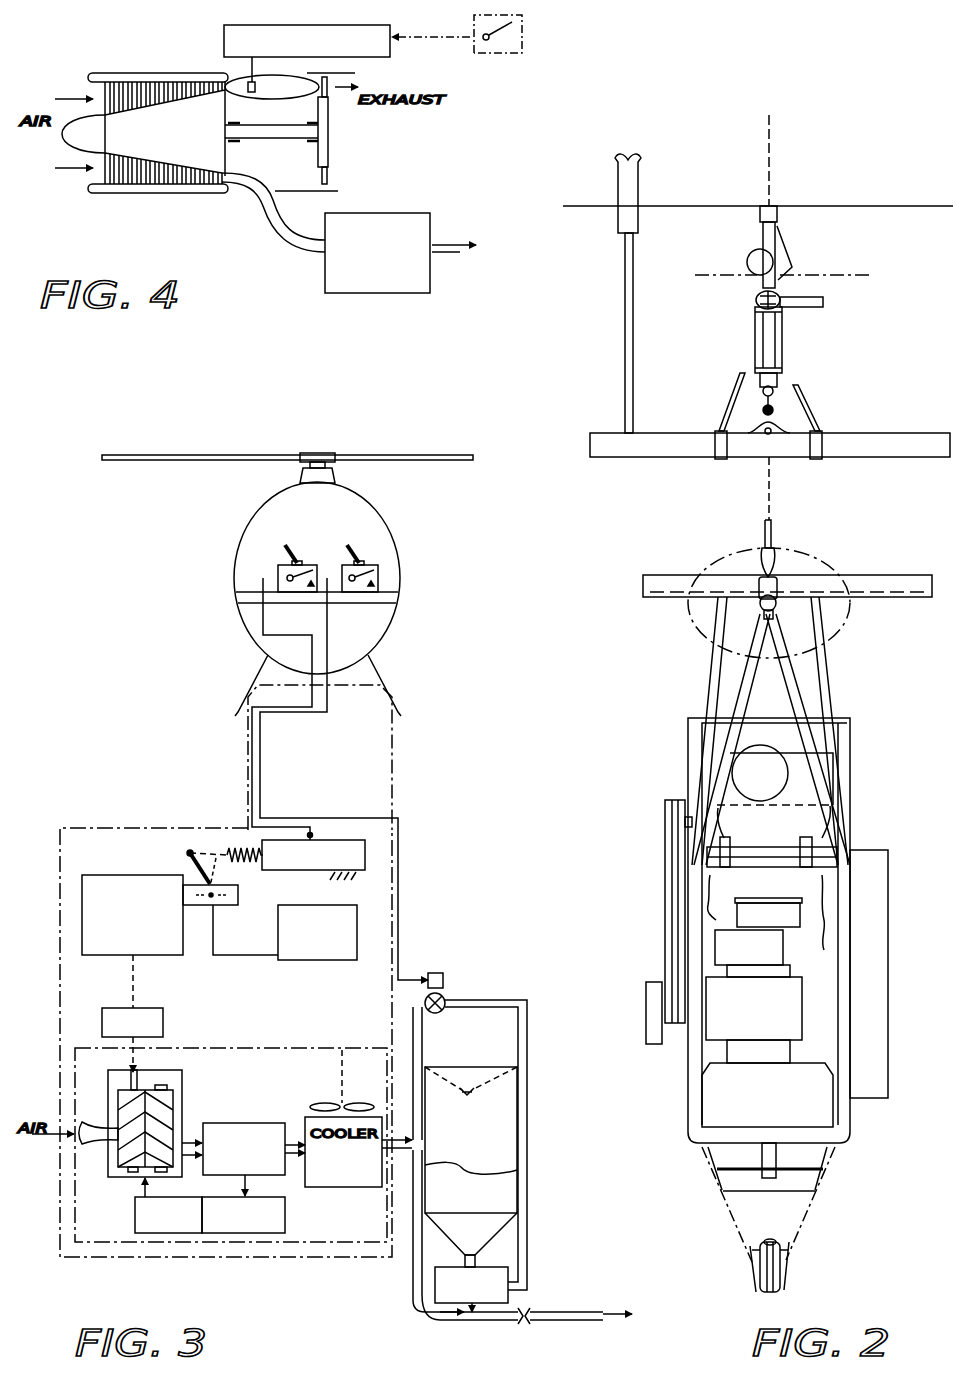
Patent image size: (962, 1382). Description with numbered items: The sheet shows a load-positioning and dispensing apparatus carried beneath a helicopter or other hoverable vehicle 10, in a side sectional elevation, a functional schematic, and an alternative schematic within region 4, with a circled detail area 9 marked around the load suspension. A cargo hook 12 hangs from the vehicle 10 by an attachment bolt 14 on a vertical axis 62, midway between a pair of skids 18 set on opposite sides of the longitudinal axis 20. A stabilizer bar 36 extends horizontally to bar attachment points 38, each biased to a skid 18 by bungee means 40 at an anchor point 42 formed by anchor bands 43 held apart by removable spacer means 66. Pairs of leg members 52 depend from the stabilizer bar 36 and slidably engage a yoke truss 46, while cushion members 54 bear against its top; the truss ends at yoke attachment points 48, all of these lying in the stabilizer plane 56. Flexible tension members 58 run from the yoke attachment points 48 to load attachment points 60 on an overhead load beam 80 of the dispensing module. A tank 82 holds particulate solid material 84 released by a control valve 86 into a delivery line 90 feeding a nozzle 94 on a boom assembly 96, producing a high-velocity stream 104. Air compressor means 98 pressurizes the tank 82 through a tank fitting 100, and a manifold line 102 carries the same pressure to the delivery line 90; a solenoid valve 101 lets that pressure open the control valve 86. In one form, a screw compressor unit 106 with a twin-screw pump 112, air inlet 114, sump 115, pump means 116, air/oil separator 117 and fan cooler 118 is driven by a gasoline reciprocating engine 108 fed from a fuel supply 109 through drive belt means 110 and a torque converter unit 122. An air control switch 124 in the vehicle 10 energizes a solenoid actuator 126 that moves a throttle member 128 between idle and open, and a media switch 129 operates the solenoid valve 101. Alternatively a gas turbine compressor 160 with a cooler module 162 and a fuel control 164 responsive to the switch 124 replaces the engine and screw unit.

In FIG. 3, the region 4 is at (398, 948).
In FIG. 2, the hook assembly detail region 9 is at (690, 622).
In FIG. 2, the hoverable vehicle 10 is at (592, 210).
In FIG. 3, the hoverable vehicle 10 is at (235, 622).
In FIG. 2, the cargo hook 12 is at (779, 246).
In FIG. 2, the attachment bolt 14 is at (760, 228).
In FIG. 2, the skids 18 is at (684, 433).
In FIG. 2, the longitudinal axis 20 is at (852, 275).
In FIG. 2, the stabilizer bar 36 is at (746, 255).
In FIG. 2, the bar attachment points 38 is at (755, 301).
In FIG. 2, the bungee means 40 is at (740, 374).
In FIG. 2, the anchor point 42 is at (730, 406).
In FIG. 2, the anchor band 43 is at (722, 426).
In FIG. 2, the yoke truss 46 is at (783, 352).
In FIG. 2, the yoke attachment points 48 is at (756, 375).
In FIG. 2, the leg members 52 is at (755, 326).
In FIG. 2, the cushion members 54 is at (756, 294).
In FIG. 2, the stabilizer plane 56 is at (771, 156).
In FIG. 2, the flexible tension members 58 is at (773, 531).
In FIG. 2, the load attachment points 60 is at (781, 572).
In FIG. 2, the vertical axis 62 is at (766, 128).
In FIG. 2, the spacer means 66 is at (796, 446).
In FIG. 2, the load beam 80 is at (774, 613).
In FIG. 3, the tank 82 is at (465, 1048).
In FIG. 3, the particulate solid material 84 is at (482, 1210).
In FIG. 3, the control valve 86 is at (527, 1288).
In FIG. 2, the delivery line 90 is at (762, 1158).
In FIG. 3, the delivery line 90 is at (575, 1320).
In FIG. 3, the nozzle 94 is at (605, 1321).
In FIG. 2, the boom assembly 96 is at (798, 1247).
In FIG. 3, the air compressor means 98 is at (396, 894).
In FIG. 3, the tank fitting 100 is at (420, 1140).
In FIG. 3, the solenoid valve 101 is at (444, 995).
In FIG. 3, the manifold line 102 is at (413, 1302).
In FIG. 3, the high-velocity stream 104 is at (628, 1300).
In FIG. 3, the screw compressor unit 106 is at (366, 1047).
In FIG. 2, the gasoline reciprocating engine 108 is at (688, 776).
In FIG. 3, the gasoline reciprocating engine 108 is at (140, 875).
In FIG. 2, the fuel supply 109 is at (766, 911).
In FIG. 3, the fuel supply 109 is at (330, 960).
In FIG. 2, the drive belt means 110 is at (665, 953).
In FIG. 3, the drive belt means 110 is at (137, 979).
In FIG. 2, the twin-screw pump 112 is at (754, 1020).
In FIG. 3, the twin-screw pump 112 is at (182, 1091).
In FIG. 2, the air inlet 114 is at (752, 953).
In FIG. 3, the air inlet 114 is at (82, 1134).
In FIG. 2, the sump 115 is at (767, 1095).
In FIG. 3, the sump 115 is at (285, 1221).
In FIG. 3, the pump means 116 is at (135, 1219).
In FIG. 2, the air/oil separator 117 is at (768, 912).
In FIG. 3, the air/oil separator 117 is at (258, 1123).
In FIG. 2, the fan cooler 118 is at (888, 940).
In FIG. 2, the torque converter unit 122 is at (652, 1044).
In FIG. 3, the torque converter unit 122 is at (163, 1019).
In FIG. 4, the air control switch 124 is at (480, 53).
In FIG. 3, the air control switch 124 is at (320, 560).
In FIG. 3, the solenoid actuator 126 is at (356, 806).
In FIG. 3, the throttle member 128 is at (212, 900).
In FIG. 3, the media switch 129 is at (372, 560).
In FIG. 4, the gas turbine compressor 160 is at (175, 193).
In FIG. 4, the cooler module 162 is at (325, 279).
In FIG. 4, the fuel control 164 is at (224, 40).
In FIG. 2, the fuel control 164 is at (915, 575).